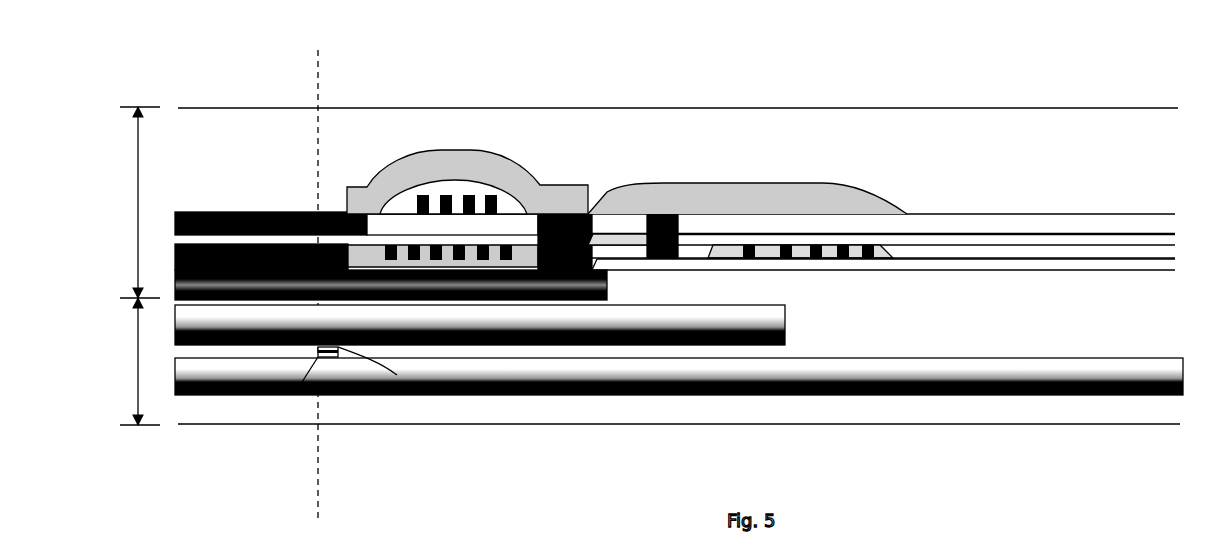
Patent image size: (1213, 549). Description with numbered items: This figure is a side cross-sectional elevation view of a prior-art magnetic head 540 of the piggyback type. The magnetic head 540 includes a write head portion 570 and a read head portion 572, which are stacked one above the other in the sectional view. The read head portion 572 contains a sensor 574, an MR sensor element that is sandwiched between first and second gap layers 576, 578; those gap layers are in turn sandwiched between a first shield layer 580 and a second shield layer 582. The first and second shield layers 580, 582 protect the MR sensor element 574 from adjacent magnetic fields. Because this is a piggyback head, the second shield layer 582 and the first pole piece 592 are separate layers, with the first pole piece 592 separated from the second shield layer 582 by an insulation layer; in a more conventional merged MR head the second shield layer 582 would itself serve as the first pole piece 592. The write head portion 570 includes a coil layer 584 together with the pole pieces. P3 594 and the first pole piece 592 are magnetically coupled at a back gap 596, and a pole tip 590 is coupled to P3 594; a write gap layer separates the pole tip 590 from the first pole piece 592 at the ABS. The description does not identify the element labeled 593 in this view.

The magnetic head 540 is at (262, 85).
The write head portion 570 is at (136, 225).
The read head portion 572 is at (137, 332).
The sensor 574 is at (338, 357).
The first gap layer 576 is at (407, 395).
The second gap layer 578 is at (292, 393).
The first shield layer 580 is at (745, 396).
The second shield layer 582 is at (785, 308).
The coil layer 584 is at (492, 193).
The pole tip 590 is at (303, 212).
The first pole piece 592 is at (606, 282).
The read head portion 593 is at (174, 307).
The P3 594 is at (435, 160).
The back gap 596 is at (588, 212).